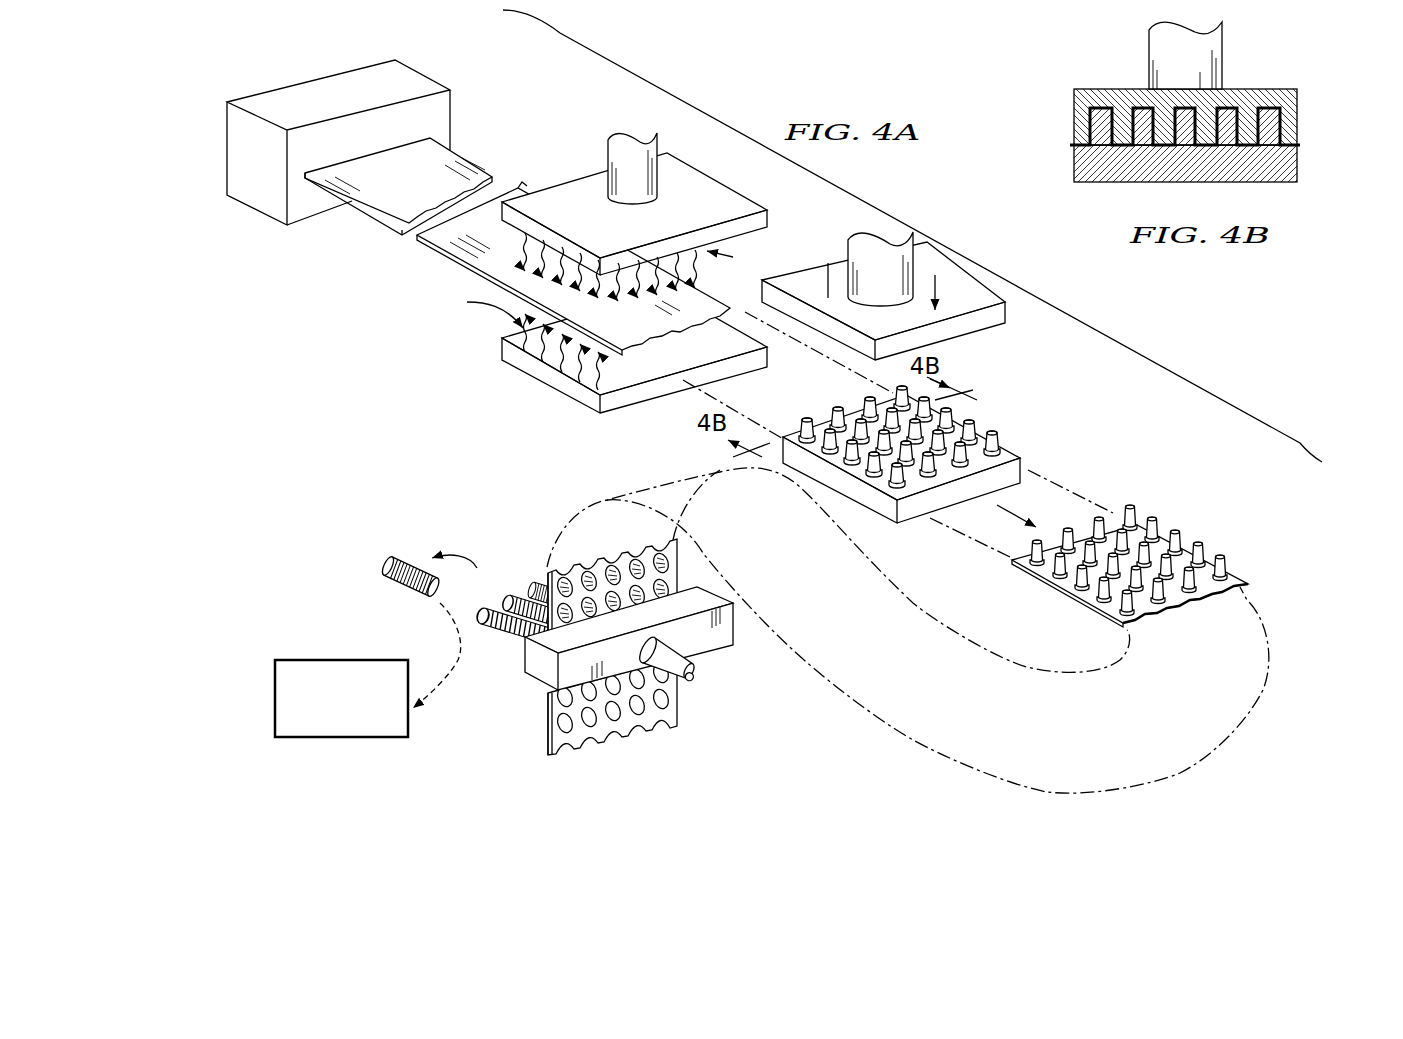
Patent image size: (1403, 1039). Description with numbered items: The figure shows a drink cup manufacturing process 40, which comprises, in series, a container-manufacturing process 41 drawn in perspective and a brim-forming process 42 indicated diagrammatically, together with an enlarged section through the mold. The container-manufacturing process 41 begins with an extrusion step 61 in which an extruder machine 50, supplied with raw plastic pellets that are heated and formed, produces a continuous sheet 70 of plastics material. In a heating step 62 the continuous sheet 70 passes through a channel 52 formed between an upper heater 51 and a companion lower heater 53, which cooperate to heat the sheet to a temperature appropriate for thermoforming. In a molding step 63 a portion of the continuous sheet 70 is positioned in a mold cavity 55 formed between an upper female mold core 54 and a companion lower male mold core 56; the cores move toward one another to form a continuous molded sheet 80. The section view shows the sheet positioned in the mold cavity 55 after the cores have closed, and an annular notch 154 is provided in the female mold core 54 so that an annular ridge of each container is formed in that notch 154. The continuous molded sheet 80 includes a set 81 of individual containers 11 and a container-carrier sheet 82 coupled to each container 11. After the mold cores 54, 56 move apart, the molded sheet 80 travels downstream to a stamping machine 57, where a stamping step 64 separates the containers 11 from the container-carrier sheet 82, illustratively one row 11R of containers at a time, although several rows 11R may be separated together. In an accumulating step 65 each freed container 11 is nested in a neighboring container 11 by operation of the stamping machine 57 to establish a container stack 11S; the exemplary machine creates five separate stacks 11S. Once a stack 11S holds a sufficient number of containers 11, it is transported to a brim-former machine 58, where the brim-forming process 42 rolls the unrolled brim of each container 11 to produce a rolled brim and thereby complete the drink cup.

In FIG. 4A, the extruder machine 50 is at (340, 98).
In FIG. 4A, the continuous sheet 70 is at (387, 208).
In FIG. 4A, the extrusion step 61 is at (493, 99).
In FIG. 4A, the upper heater 51 is at (686, 200).
In FIG. 4A, the heating step 62 is at (780, 210).
In FIG. 4A, the channel 52 is at (505, 253).
In FIG. 4A, the lower heater 53 is at (640, 412).
In FIG. 4A, the upper female mold core 54 is at (957, 290).
In FIG. 4B, the upper female mold core 54 is at (1087, 87).
In FIG. 4A, the molding step 63 is at (1028, 390).
In FIG. 4A, the mold cavity 55 is at (944, 454).
In FIG. 4B, the mold cavity 55 is at (1280, 120).
In FIG. 4A, the lower male mold core 56 is at (1031, 477).
In FIG. 4B, the lower male mold core 56 is at (1120, 187).
In FIG. 4A, the set of containers 81 is at (1165, 537).
In FIG. 4A, the container 11 is at (1127, 520).
In FIG. 4A, the container-carrier sheet 82 is at (915, 622).
In FIG. 4A, the continuous molded sheet 80 is at (1003, 616).
In FIG. 4A, the stamping machine 57 is at (707, 592).
In FIG. 4A, the stamping step 64 is at (707, 662).
In FIG. 4A, the accumulating step 65 is at (492, 577).
In FIG. 4A, the row of containers 11R is at (678, 552).
In FIG. 4A, the container stack 11S is at (423, 608).
In FIG. 4A, the brim-former machine 58 is at (273, 680).
In FIG. 4A, the brim-forming process 42 is at (316, 778).
In FIG. 4A, the container-manufacturing process 41 is at (754, 728).
In FIG. 4A, the drink cup manufacturing process 40 is at (537, 814).
In FIG. 4B, the annular notch 154 is at (1113, 97).